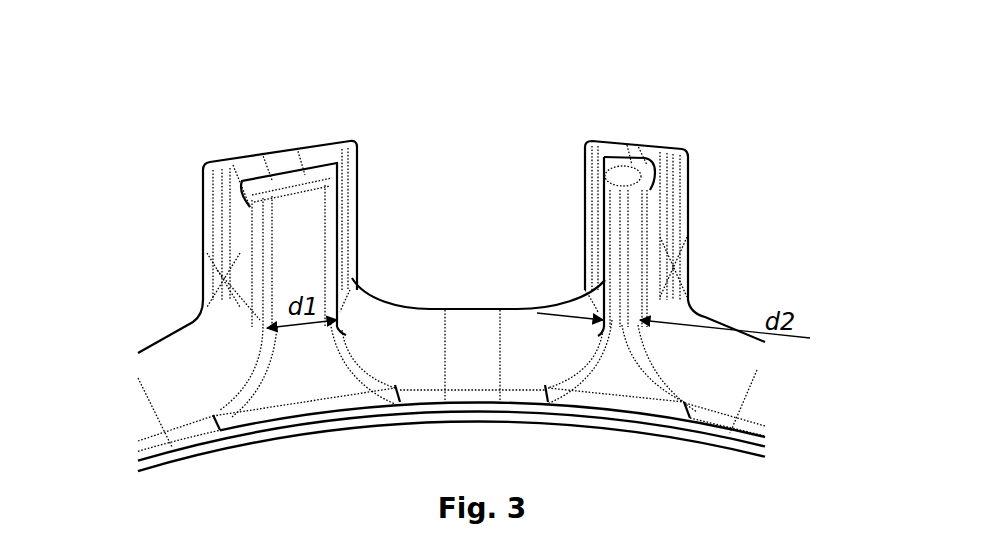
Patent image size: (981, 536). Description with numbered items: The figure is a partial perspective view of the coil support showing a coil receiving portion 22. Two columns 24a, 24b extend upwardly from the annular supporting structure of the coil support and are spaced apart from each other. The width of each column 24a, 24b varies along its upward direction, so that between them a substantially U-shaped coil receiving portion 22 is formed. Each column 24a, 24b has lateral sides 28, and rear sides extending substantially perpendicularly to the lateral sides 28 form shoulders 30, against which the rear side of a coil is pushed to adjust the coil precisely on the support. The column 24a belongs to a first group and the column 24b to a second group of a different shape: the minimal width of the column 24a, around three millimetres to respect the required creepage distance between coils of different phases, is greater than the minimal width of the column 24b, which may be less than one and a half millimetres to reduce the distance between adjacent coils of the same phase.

The coil receiving portion 22 is at (464, 148).
The column of the first group 24a is at (302, 380).
The column of the second group 24b is at (622, 388).
The lateral side 28 is at (248, 252).
The shoulder 30 is at (208, 202).